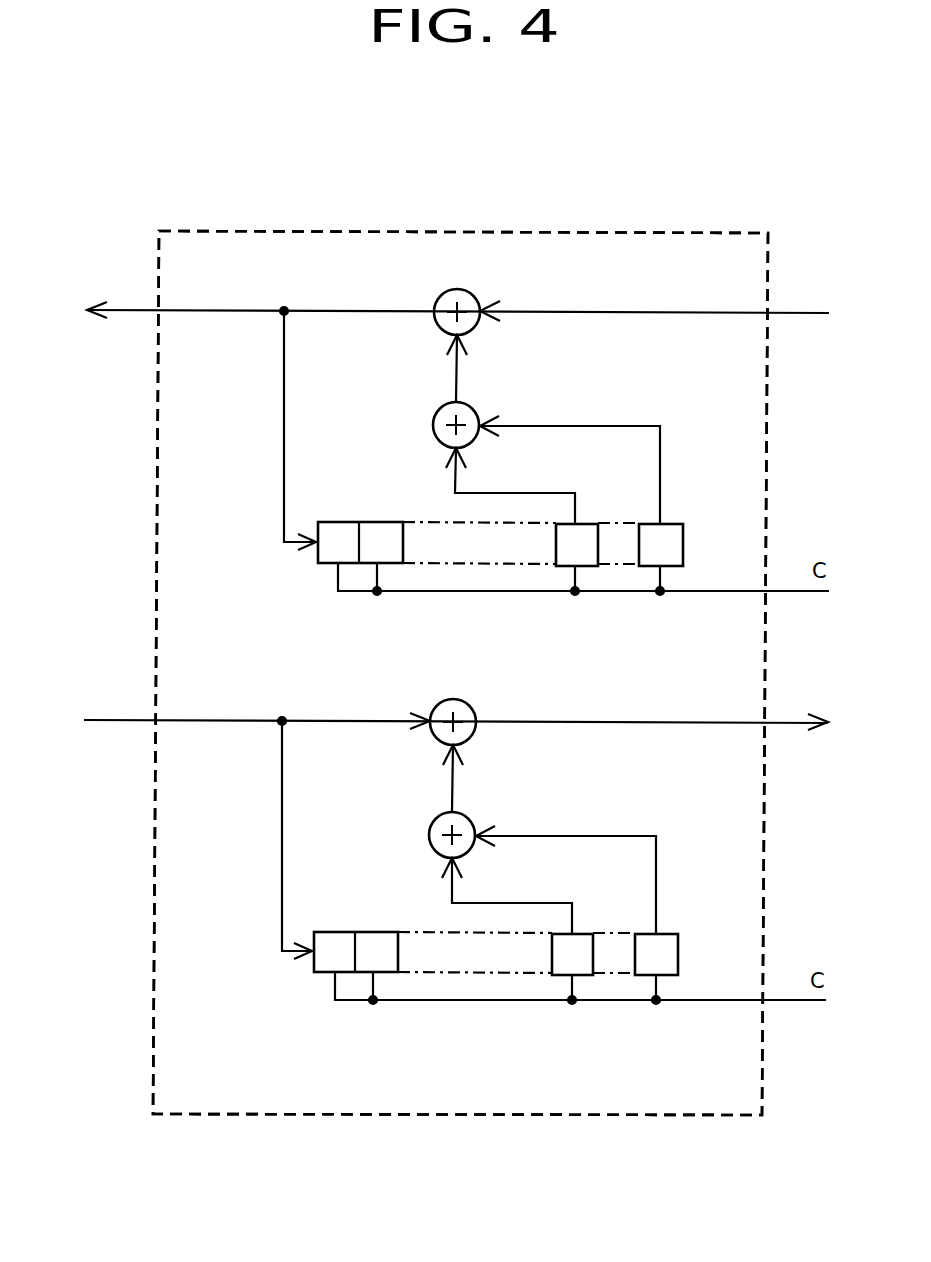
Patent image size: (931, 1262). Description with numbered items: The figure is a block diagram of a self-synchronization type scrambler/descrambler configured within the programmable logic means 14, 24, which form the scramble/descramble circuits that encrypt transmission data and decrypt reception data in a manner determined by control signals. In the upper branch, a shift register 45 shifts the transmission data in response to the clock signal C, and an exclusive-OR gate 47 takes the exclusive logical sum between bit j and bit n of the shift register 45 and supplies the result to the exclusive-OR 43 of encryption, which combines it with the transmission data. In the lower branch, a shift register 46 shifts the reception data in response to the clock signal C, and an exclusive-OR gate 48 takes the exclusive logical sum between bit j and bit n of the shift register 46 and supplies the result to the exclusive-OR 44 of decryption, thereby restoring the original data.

The programmable logic means 14 is at (381, 198).
The programmable logic means 24 is at (460, 642).
The exclusive-OR gate of encryption 43 is at (458, 289).
The exclusive-OR gate of decryption 44 is at (455, 699).
The shift register 45 is at (357, 522).
The shift register 46 is at (351, 932).
The exclusive-OR gate 47 is at (472, 403).
The exclusive-OR gate 48 is at (468, 813).